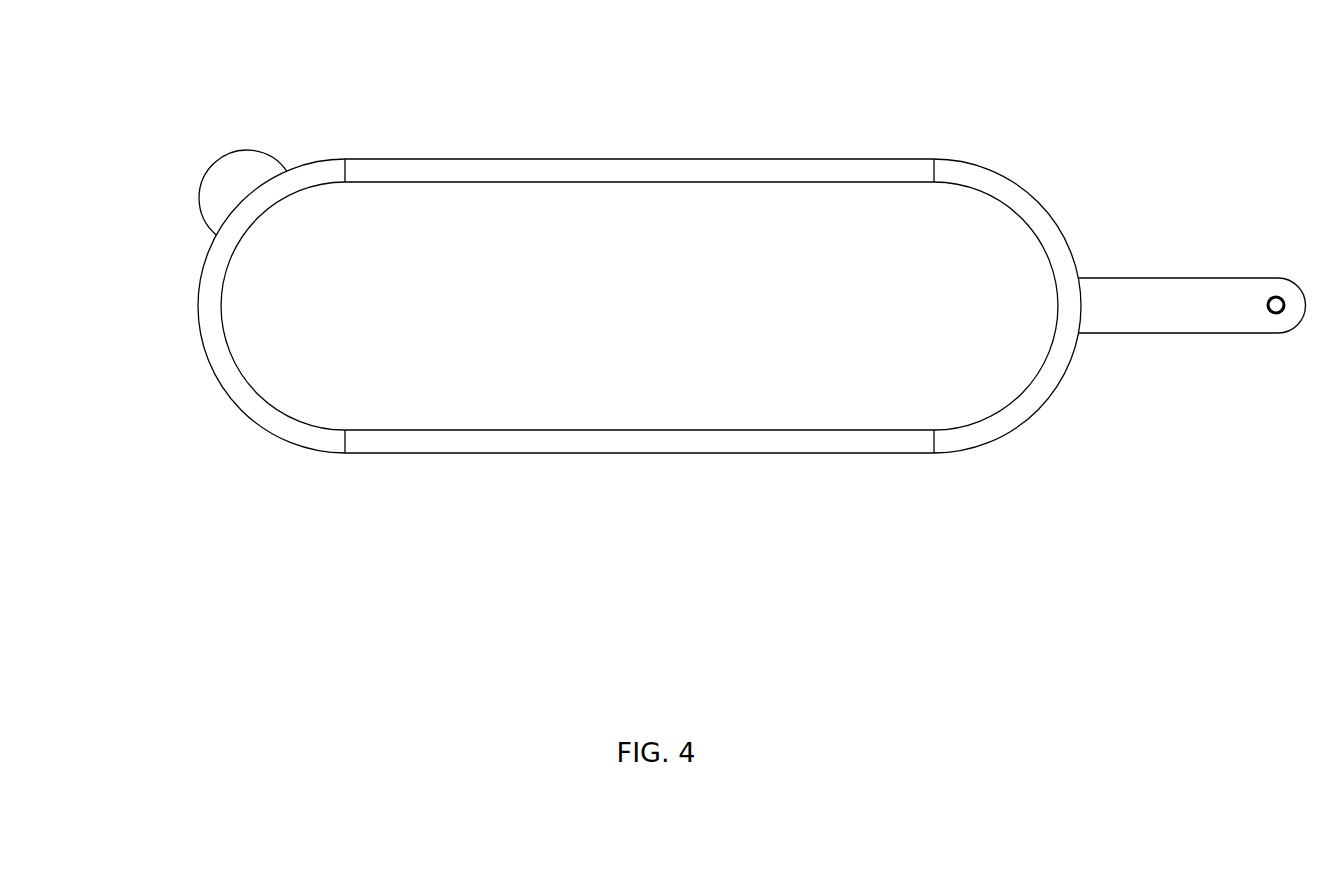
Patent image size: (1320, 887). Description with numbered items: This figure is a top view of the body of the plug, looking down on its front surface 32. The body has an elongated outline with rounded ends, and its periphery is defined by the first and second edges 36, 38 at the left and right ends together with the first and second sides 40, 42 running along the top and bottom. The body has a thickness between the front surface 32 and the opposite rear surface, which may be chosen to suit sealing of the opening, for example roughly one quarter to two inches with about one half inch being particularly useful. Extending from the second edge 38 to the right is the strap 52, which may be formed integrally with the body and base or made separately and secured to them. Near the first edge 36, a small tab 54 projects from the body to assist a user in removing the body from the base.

The front surface 32 is at (554, 288).
The first edge 36 is at (207, 302).
The second edge 38 is at (1048, 395).
The first side 40 is at (562, 153).
The second side 42 is at (580, 455).
The strap 52 is at (1237, 322).
The tab 54 is at (222, 190).